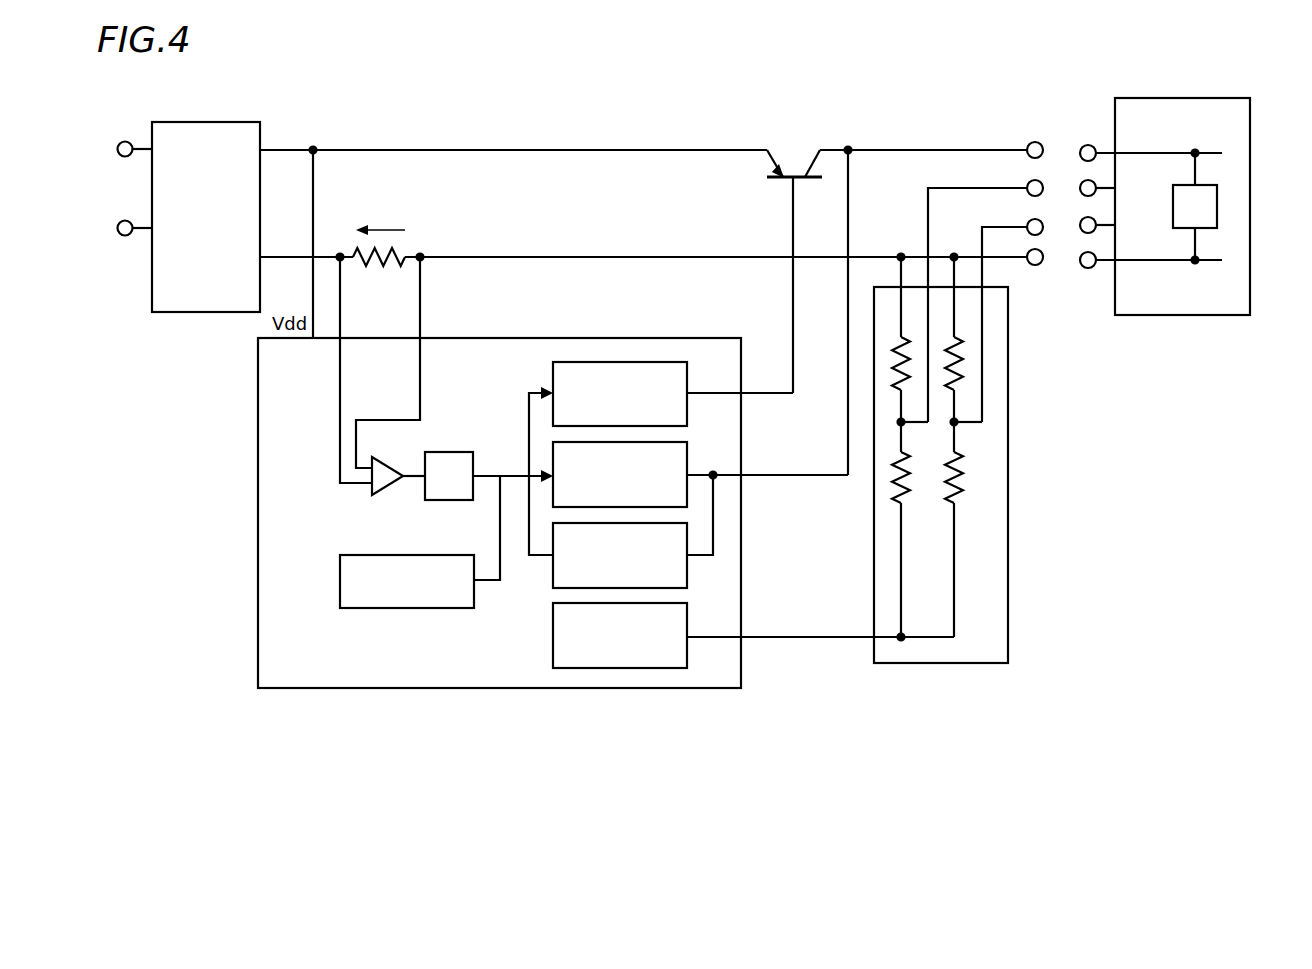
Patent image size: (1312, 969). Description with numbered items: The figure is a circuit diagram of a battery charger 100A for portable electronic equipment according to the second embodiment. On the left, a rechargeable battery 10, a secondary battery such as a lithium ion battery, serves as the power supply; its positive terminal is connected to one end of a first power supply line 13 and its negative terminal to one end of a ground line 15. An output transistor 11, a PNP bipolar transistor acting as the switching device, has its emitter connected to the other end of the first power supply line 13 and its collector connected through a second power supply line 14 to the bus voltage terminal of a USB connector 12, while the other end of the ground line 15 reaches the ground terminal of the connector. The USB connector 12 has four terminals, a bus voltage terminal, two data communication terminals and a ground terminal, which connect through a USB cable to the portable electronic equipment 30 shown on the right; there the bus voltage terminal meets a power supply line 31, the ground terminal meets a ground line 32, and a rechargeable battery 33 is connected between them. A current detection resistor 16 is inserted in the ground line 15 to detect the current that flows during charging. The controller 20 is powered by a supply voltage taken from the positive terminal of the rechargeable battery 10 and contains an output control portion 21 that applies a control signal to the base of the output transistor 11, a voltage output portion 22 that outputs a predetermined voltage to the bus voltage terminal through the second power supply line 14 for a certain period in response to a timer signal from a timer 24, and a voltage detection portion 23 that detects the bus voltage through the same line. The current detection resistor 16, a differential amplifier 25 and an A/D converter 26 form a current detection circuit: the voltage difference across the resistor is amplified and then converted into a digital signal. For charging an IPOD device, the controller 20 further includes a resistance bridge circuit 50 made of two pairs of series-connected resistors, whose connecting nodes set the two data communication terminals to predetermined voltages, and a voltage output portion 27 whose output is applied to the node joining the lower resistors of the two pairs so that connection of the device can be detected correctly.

The battery charger 100A is at (533, 117).
The rechargeable battery 10 is at (220, 121).
The output transistor 11 is at (798, 149).
The USB connector 12 is at (1050, 103).
The first power supply line 13 is at (468, 149).
The second power supply line 14 is at (931, 149).
The ground line 15 is at (876, 256).
The current detection resistor 16 is at (383, 270).
The controller 20 is at (588, 331).
The output control portion 21 is at (682, 380).
The voltage output portion 22 is at (682, 458).
The voltage detection portion 23 is at (680, 573).
The timer 24 is at (409, 609).
The differential amplifier 25 is at (389, 497).
The A/D converter 26 is at (449, 501).
The voltage output portion 27 is at (680, 653).
The portable electronic equipment 30 is at (1201, 94).
The power supply line 31 is at (1208, 152).
The ground line 32 is at (1208, 258).
The rechargeable battery 33 is at (1208, 203).
The resistance bridge circuit 50 is at (1008, 440).